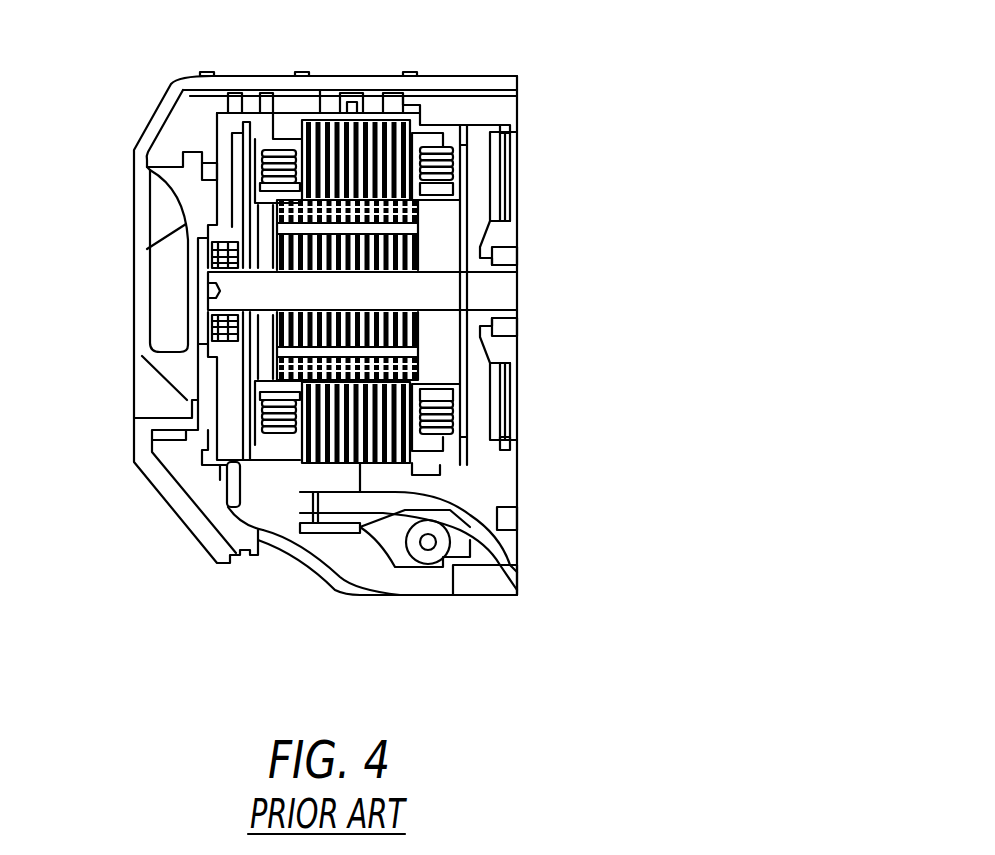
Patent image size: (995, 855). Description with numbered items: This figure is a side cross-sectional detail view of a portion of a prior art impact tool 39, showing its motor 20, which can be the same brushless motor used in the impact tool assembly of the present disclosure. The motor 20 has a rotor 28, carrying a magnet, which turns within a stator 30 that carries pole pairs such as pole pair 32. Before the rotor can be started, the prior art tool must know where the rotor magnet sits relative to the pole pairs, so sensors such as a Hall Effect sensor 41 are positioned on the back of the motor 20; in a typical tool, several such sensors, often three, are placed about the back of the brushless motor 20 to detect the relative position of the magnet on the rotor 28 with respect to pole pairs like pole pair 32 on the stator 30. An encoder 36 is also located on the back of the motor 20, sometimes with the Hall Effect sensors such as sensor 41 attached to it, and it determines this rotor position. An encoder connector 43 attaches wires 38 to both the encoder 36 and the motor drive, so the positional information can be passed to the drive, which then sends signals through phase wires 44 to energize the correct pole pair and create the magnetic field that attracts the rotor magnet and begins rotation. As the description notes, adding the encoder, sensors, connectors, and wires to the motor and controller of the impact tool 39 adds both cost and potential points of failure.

The impact tool 39 is at (567, 88).
The stator 30 is at (397, 192).
The motor 20 is at (480, 177).
The rotor 28 is at (490, 292).
The pole pair 32 is at (275, 330).
The Hall Effect sensor 41 is at (255, 372).
The encoder 36 is at (238, 400).
The encoder connector 43 is at (230, 490).
The phase wires 44 is at (382, 492).
The wires 38 is at (263, 530).